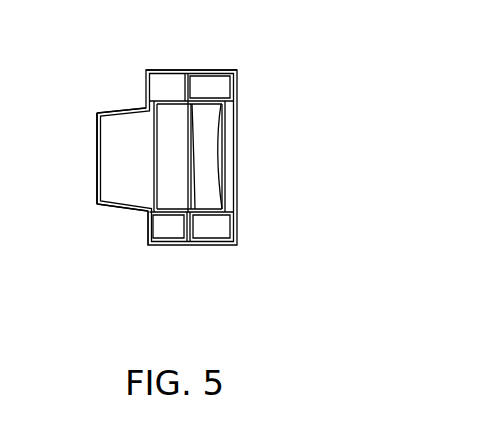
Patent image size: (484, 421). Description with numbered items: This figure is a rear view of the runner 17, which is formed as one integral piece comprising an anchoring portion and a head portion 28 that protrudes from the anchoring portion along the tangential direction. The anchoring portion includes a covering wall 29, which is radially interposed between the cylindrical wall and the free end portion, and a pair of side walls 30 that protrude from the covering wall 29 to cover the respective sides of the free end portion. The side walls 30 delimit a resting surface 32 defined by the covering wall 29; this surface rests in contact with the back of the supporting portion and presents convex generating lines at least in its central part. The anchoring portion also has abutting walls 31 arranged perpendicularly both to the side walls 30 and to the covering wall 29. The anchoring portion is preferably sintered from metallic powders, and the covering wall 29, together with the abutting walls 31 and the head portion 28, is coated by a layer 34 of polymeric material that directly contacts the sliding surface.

The runner 17 is at (235, 252).
The head portion 28 is at (107, 150).
The covering wall 29 is at (230, 201).
The side walls 30 is at (203, 85).
The abutting walls 31 is at (152, 93).
The resting surface 32 is at (208, 165).
The layer of polymeric material 34 is at (145, 70).